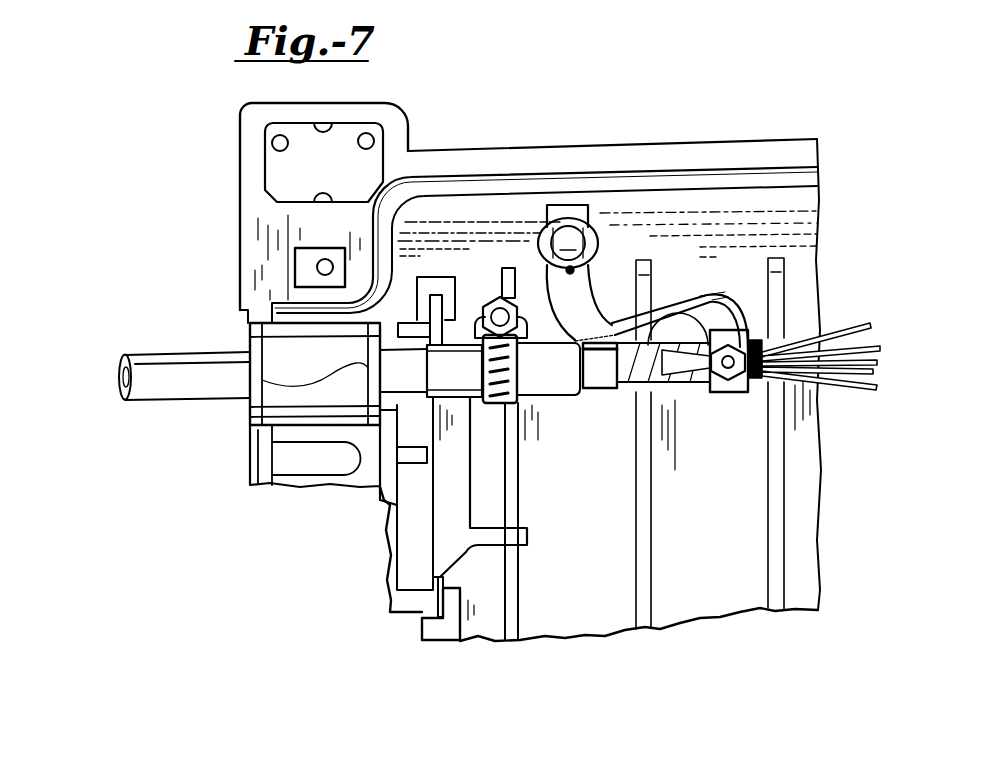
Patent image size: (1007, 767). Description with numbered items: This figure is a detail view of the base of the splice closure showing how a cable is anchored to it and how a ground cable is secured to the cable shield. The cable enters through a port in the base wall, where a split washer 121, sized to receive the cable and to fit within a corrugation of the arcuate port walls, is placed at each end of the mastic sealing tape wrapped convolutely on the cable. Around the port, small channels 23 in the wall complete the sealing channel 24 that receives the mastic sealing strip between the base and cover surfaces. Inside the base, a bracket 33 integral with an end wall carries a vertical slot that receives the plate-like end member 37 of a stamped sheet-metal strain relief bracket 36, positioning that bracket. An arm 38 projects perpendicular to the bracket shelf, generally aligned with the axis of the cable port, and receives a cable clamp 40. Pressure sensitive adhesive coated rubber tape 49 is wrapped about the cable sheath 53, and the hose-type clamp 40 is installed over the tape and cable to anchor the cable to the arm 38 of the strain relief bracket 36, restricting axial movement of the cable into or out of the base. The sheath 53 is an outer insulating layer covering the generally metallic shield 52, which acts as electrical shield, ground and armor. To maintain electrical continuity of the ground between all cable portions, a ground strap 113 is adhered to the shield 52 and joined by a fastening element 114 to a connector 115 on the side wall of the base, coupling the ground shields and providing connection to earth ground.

The small channels 23 is at (372, 488).
The sealing channel 24 is at (637, 168).
The bracket 33 is at (462, 632).
The strain relief bracket 36 is at (473, 473).
The plate-like end member 37 is at (432, 603).
The arm 38 is at (523, 547).
The cable clamp 40 is at (480, 312).
The pressure sensitive adhesive coated rubber tape 49 is at (527, 400).
The shield 52 is at (687, 395).
The protective sheath 53 is at (602, 383).
The ground strap 113 is at (745, 315).
The fastening element 114 is at (573, 272).
The connector 115 is at (568, 257).
The split washer 121 is at (367, 483).